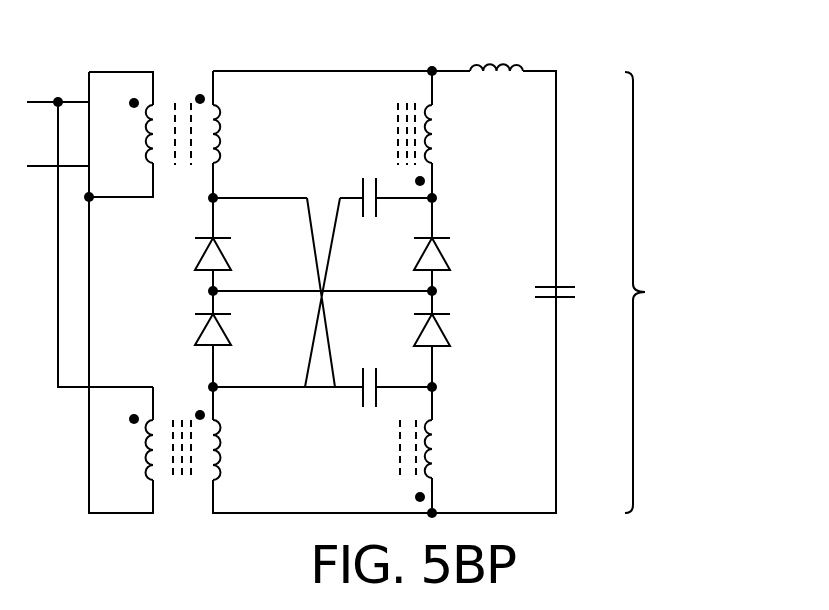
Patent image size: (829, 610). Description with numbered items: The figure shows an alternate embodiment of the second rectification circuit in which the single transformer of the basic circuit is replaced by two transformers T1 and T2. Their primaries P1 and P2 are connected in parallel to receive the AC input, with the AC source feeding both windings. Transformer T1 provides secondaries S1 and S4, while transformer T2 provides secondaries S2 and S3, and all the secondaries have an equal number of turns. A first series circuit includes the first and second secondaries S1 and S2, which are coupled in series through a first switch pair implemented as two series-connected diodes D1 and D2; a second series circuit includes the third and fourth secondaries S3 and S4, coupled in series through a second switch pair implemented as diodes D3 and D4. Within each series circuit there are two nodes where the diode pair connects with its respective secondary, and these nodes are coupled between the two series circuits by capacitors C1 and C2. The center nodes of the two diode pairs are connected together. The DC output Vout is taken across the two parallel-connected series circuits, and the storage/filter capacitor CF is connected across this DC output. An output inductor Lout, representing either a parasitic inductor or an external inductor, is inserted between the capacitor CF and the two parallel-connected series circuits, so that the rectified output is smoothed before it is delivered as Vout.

The AC input AC is at (29, 134).
The transformer T1 is at (187, 111).
The transformer T2 is at (187, 426).
The primary P1 is at (132, 134).
The primary P2 is at (132, 450).
The first transformer secondary S1 is at (235, 134).
The second transformer secondary S2 is at (234, 450).
The third transformer secondary S3 is at (436, 134).
The fourth transformer secondary S4 is at (437, 450).
The diode D1 is at (235, 331).
The diode D2 is at (235, 256).
The diode D3 is at (454, 331).
The diode D4 is at (454, 256).
The capacitor C1 is at (371, 181).
The capacitor C2 is at (369, 407).
The output inductor Lout is at (496, 50).
The storage/filter capacitor CF is at (572, 292).
The DC output Vout is at (706, 292).